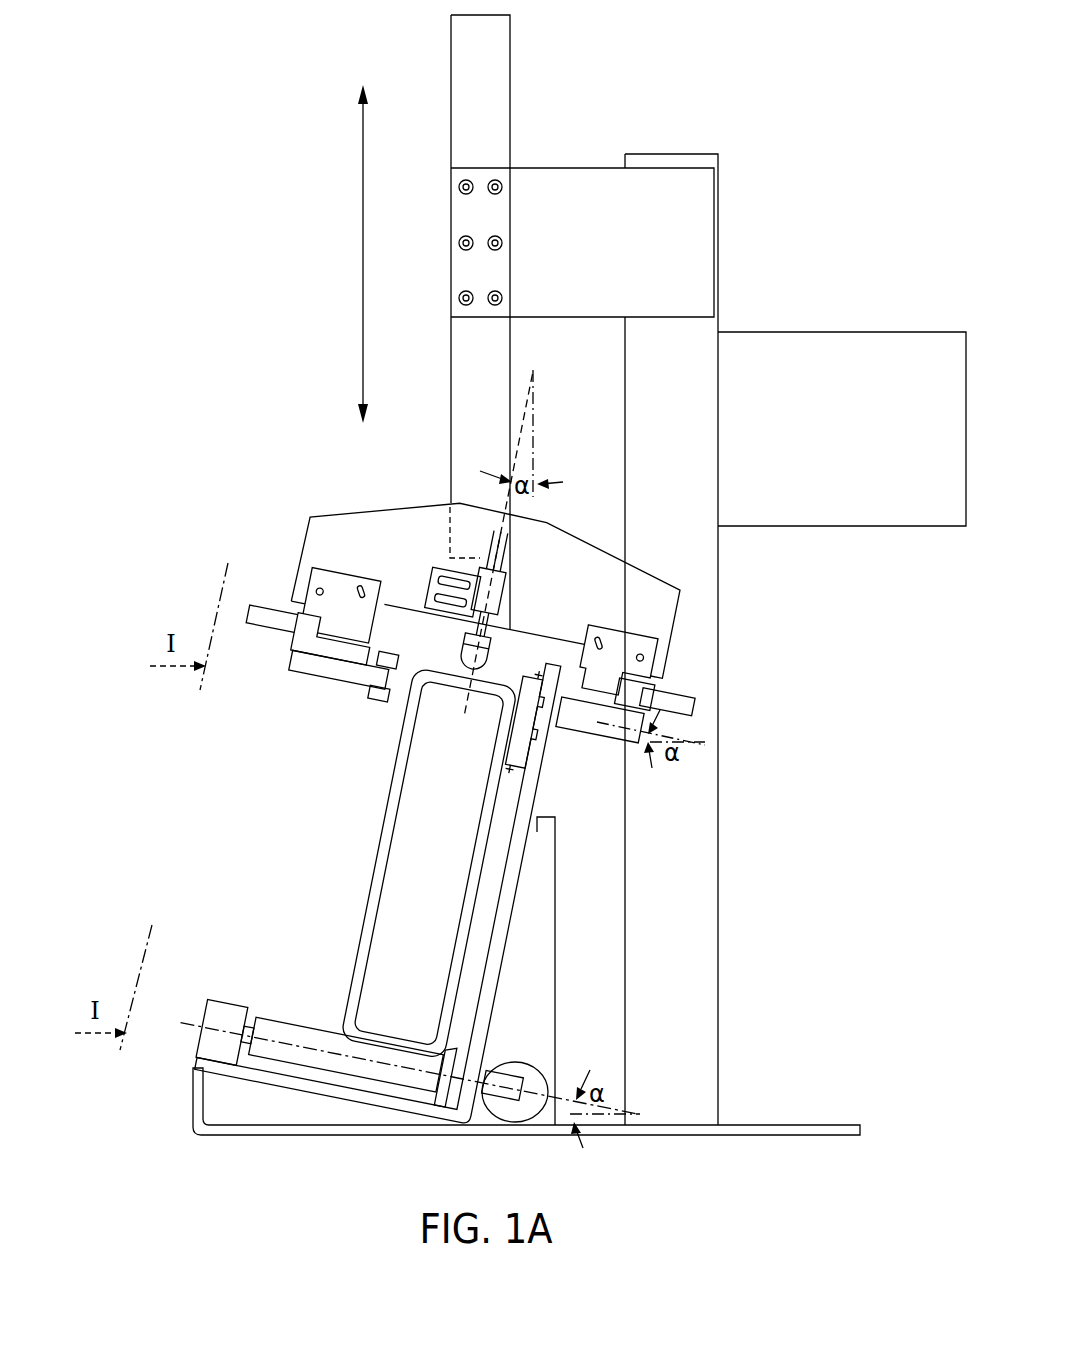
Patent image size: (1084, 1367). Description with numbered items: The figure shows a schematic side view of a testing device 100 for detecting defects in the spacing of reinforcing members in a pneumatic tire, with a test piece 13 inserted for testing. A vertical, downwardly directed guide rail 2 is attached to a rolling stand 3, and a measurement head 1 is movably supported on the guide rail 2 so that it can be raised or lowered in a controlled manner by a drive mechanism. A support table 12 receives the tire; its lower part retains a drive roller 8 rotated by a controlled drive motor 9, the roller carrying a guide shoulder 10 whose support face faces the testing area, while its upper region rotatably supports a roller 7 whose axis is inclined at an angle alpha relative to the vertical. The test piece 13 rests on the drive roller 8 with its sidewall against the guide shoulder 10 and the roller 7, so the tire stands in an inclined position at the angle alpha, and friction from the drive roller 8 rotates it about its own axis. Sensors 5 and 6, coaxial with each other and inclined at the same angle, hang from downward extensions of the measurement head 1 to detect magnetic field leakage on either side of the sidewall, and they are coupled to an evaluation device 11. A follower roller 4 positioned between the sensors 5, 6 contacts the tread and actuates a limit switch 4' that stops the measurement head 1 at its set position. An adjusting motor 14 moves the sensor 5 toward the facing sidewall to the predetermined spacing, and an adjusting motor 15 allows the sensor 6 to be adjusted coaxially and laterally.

The testing device 100 is at (777, 132).
The measurement head 1 is at (574, 533).
The guide rail 2 is at (460, 385).
The rolling stand 3 is at (703, 585).
The follower roller 4 is at (436, 687).
The limit switch 4' is at (458, 571).
The sensor 5 is at (333, 665).
The sensor 6 is at (612, 723).
The roller 7 is at (527, 750).
The drive roller 8 is at (322, 1060).
The drive motor 9 is at (508, 1100).
The guide shoulder 10 is at (445, 1095).
The evaluation device 11 is at (896, 505).
The support table 12 is at (512, 945).
The test piece 13 is at (383, 945).
The adjusting motor 14 is at (268, 620).
The adjusting motor 15 is at (692, 700).